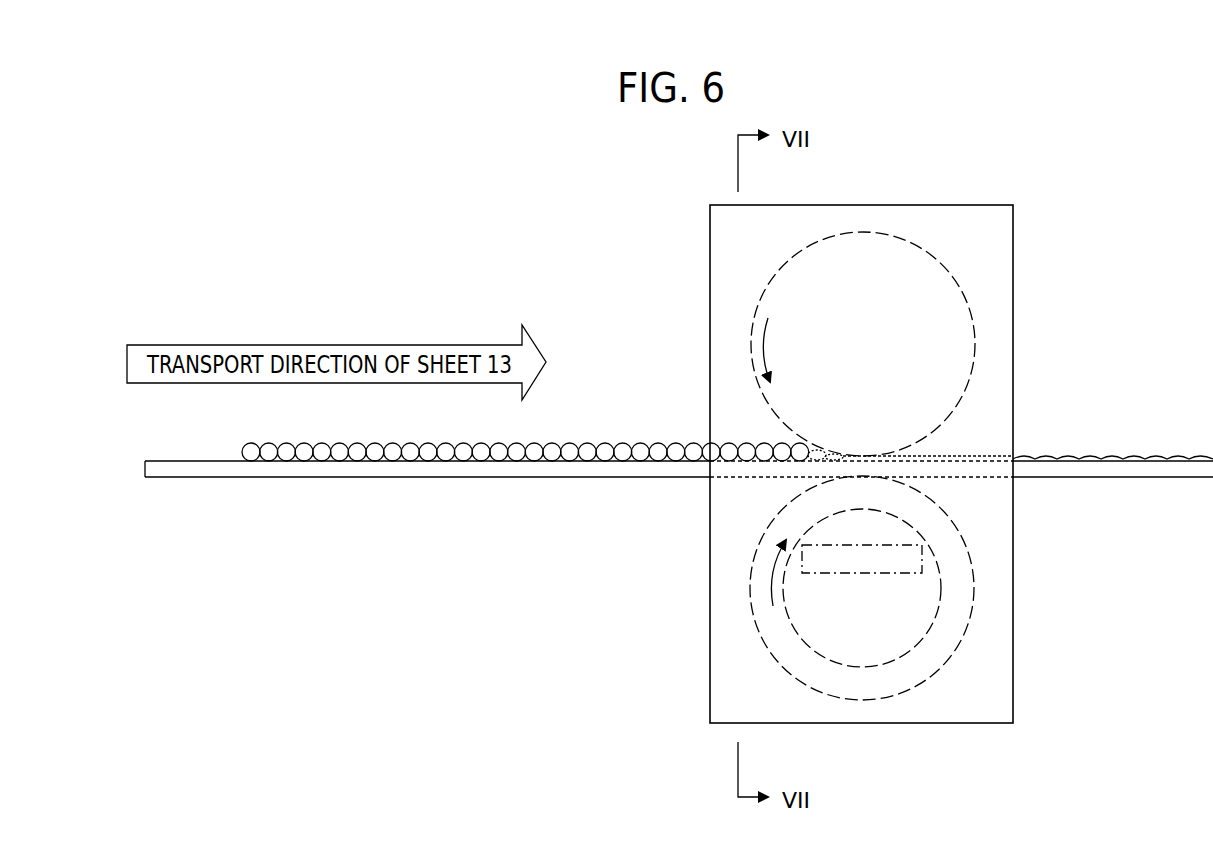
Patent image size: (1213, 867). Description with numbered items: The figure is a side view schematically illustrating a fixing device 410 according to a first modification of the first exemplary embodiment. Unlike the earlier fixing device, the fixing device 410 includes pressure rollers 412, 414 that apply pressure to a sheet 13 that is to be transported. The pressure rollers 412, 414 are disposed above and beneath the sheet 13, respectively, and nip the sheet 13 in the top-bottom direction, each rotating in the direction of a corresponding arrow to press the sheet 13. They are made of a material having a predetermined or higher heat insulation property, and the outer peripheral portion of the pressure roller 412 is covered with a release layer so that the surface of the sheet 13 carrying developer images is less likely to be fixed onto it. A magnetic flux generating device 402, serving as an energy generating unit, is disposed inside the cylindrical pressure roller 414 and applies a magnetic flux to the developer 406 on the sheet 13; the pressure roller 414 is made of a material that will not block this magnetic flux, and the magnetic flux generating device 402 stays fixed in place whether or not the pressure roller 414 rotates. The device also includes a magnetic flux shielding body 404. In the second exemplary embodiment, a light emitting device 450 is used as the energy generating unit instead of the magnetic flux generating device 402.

The sheet 13 is at (167, 485).
The developer 406 is at (557, 420).
The fixing device 410 is at (1068, 168).
The magnetic flux shielding body 404 is at (1013, 253).
The pressure roller 412 is at (973, 340).
The pressure roller 414 is at (967, 540).
The magnetic flux generating device 402 is at (862, 590).
The light emitting device 450 is at (862, 576).